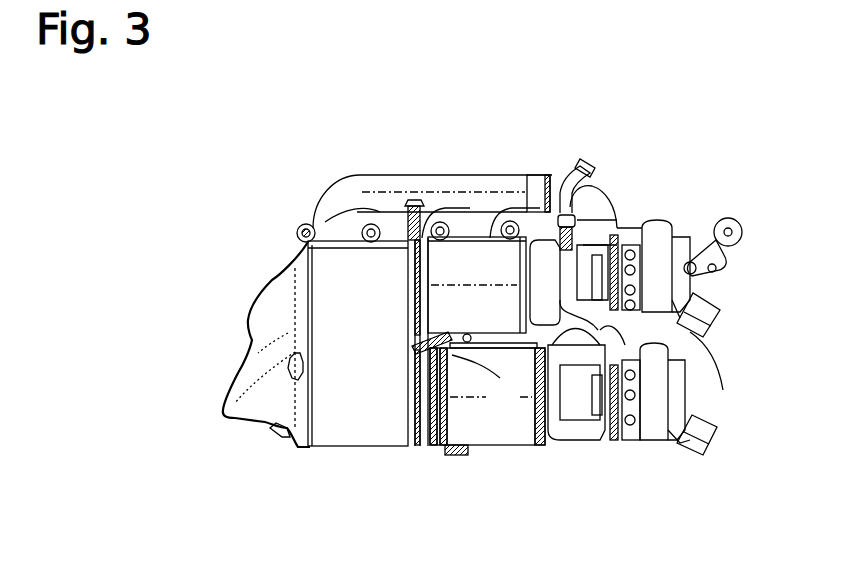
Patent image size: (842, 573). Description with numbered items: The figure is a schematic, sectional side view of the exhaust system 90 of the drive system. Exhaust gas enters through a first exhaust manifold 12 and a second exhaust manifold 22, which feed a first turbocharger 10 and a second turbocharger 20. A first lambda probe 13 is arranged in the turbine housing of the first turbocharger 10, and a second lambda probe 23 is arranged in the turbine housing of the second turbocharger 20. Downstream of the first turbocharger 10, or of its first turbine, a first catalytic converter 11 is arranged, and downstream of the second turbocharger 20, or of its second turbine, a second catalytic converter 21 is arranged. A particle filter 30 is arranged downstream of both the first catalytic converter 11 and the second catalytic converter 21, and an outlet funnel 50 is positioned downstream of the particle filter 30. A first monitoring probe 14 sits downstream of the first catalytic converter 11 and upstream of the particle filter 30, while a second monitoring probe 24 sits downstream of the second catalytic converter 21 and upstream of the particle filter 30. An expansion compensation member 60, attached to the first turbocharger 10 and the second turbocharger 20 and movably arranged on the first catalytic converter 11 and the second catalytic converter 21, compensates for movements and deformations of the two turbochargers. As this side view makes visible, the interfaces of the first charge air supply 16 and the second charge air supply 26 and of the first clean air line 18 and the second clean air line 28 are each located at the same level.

The exhaust system 90 is at (188, 346).
The outlet funnel 50 is at (256, 304).
The second exhaust manifold 22 is at (325, 222).
The second monitoring probe 24 is at (416, 214).
The second catalytic converter 21 is at (495, 255).
The second lambda probe 23 is at (556, 210).
The second clean air line 28 is at (680, 262).
The first exhaust manifold 12 is at (718, 268).
The second charge air supply 26 is at (648, 318).
The second turbocharger 20 is at (692, 428).
The first charge air supply 16 is at (703, 447).
The first clean air line 18 is at (680, 443).
The first turbocharger 10 is at (642, 433).
The first lambda probe 13 is at (640, 437).
The first catalytic converter 11 is at (510, 427).
The first monitoring probe 14 is at (491, 398).
The expansion compensation member 60 is at (462, 457).
The particle filter 30 is at (347, 410).